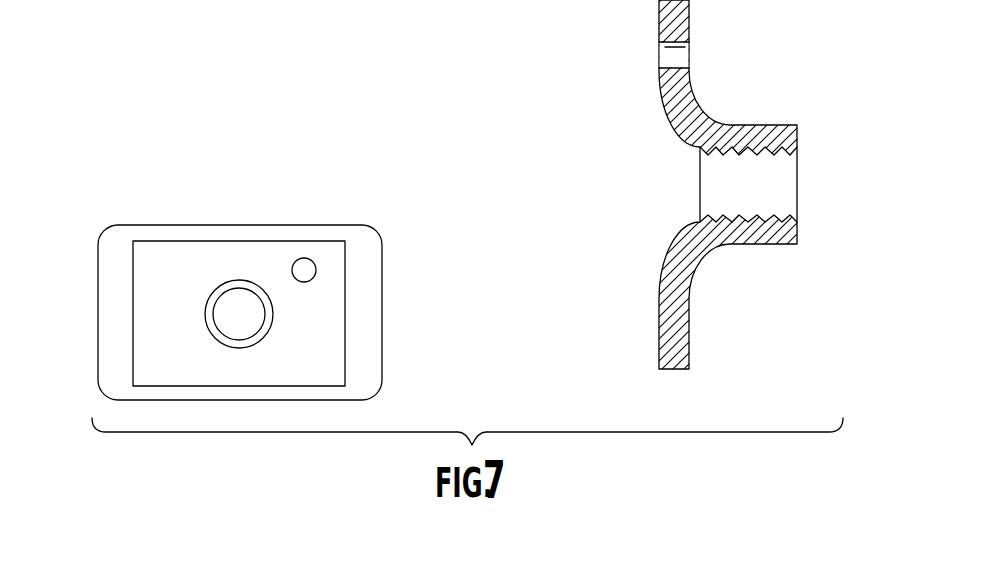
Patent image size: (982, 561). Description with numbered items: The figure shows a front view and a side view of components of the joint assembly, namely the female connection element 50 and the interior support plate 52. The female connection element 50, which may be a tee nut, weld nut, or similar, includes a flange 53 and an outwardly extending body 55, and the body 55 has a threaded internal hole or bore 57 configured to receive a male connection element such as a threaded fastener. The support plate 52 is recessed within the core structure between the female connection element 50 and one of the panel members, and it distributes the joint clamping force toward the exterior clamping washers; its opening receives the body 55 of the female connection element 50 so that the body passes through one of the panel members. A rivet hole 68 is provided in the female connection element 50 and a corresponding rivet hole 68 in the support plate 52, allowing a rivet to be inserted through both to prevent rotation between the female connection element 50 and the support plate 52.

The female connection element 50 is at (182, 270).
The interior support plate 52 is at (362, 362).
The flange 53 is at (690, 353).
The outwardly extending body 55 is at (752, 124).
The threaded internal hole or bore 57 is at (740, 196).
The rivet hole 68 is at (304, 270).